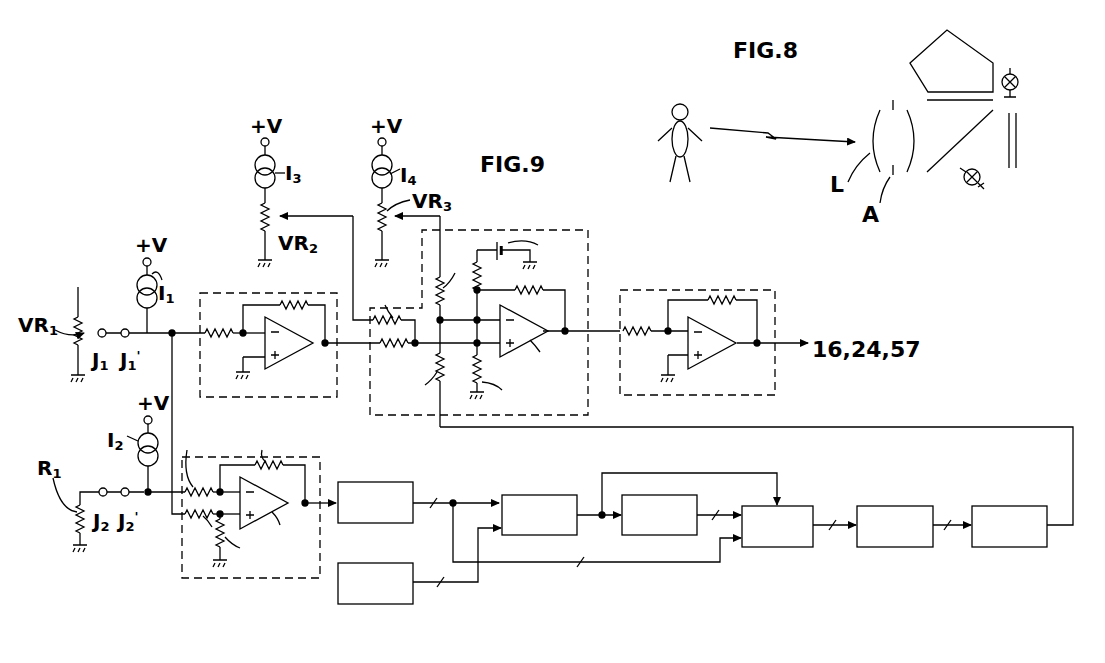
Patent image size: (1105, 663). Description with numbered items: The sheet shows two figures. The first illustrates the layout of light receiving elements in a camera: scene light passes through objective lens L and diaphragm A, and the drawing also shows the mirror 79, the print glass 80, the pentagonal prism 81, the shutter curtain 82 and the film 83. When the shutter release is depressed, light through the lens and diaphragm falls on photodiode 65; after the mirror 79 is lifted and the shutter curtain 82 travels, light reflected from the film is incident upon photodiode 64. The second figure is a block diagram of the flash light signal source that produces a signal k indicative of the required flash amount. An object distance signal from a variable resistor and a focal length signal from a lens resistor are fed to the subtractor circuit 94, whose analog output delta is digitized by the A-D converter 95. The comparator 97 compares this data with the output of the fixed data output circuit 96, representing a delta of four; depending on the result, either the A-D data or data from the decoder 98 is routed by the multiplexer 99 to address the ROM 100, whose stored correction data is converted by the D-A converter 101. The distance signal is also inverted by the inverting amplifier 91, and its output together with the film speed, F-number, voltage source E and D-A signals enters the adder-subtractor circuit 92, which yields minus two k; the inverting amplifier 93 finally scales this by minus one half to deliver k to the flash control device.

In FIG. 8, the photodiode 64 is at (983, 182).
In FIG. 8, the photodiode 65 is at (1022, 82).
In FIG. 8, the mirror 79 is at (977, 127).
In FIG. 8, the print glass 80 is at (945, 102).
In FIG. 8, the pentagonal prism 81 is at (972, 52).
In FIG. 8, the shutter curtain 82 is at (1007, 108).
In FIG. 8, the film 83 is at (1017, 143).
In FIG. 9, the inverting amplifier 91 is at (300, 397).
In FIG. 9, the adder-subtractor circuit 92 is at (407, 415).
In FIG. 9, the inverting amplifier 93 is at (772, 392).
In FIG. 9, the subtractor circuit 94 is at (298, 567).
In FIG. 9, the A-D converter 95 is at (397, 523).
In FIG. 9, the fixed data output circuit 96 is at (397, 605).
In FIG. 9, the comparator 97 is at (550, 495).
In FIG. 9, the decoder 98 is at (633, 535).
In FIG. 9, the multiplexer 99 is at (782, 547).
In FIG. 9, the ROM 100 is at (903, 547).
In FIG. 9, the D-A converter 101 is at (997, 547).